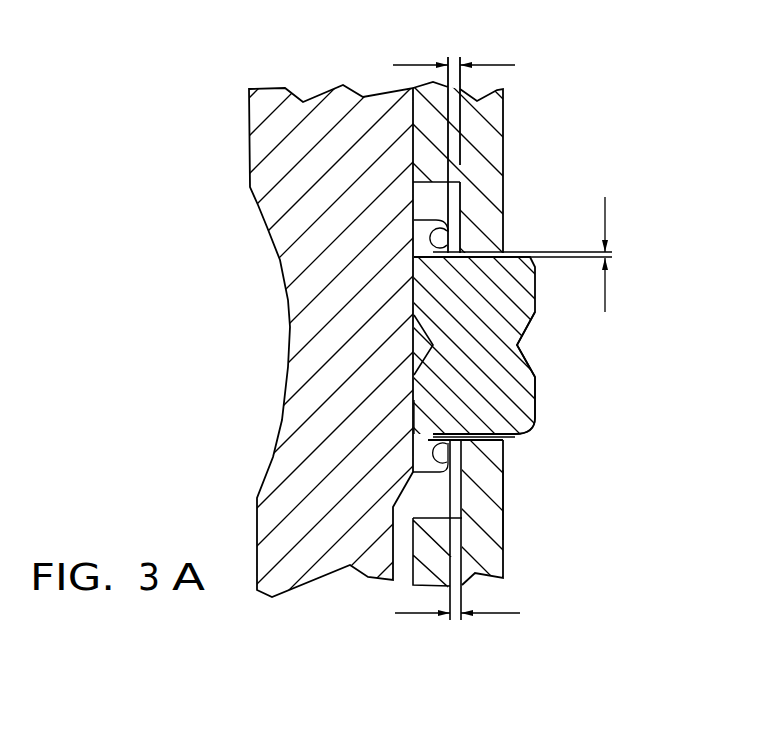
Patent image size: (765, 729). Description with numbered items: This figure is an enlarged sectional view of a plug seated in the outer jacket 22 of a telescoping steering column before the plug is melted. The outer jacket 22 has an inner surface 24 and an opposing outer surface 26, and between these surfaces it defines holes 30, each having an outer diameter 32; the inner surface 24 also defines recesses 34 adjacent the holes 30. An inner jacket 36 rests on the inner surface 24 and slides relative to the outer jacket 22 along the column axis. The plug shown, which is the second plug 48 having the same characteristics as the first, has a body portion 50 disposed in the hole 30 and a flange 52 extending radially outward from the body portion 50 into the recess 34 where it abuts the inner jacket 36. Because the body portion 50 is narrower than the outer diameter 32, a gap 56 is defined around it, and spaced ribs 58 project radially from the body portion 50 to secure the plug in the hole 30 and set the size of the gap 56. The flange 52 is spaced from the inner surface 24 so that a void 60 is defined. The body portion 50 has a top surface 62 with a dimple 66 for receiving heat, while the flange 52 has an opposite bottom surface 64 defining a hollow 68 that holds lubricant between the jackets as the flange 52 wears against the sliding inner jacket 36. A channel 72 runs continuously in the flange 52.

The outer jacket 22 is at (497, 540).
The inner surface 24 is at (413, 565).
The outer surface 26 is at (503, 507).
The holes 30 is at (505, 467).
The outer diameter 32 is at (500, 213).
The recesses 34 is at (430, 180).
The inner jacket 36 is at (287, 580).
The second plug 48 is at (426, 288).
The body portion 50 is at (519, 293).
The flange 52 is at (420, 447).
The gap 56 is at (610, 255).
The ribs 58 is at (520, 434).
The void 60 is at (455, 63).
The top surface 62 is at (538, 390).
The bottom surface 64 is at (414, 415).
The dimple 66 is at (530, 342).
The hollow 68 is at (420, 346).
The channel 72 is at (432, 243).